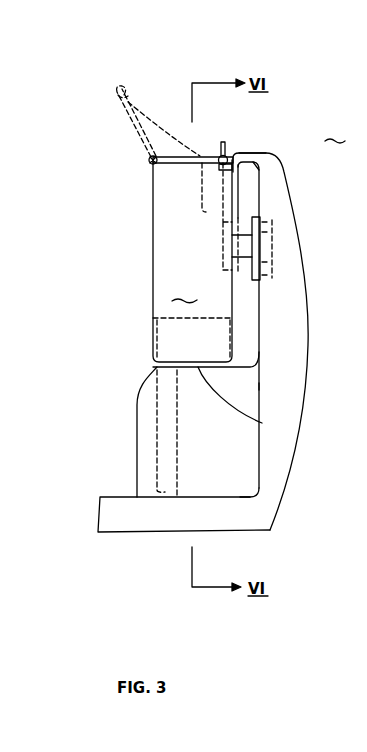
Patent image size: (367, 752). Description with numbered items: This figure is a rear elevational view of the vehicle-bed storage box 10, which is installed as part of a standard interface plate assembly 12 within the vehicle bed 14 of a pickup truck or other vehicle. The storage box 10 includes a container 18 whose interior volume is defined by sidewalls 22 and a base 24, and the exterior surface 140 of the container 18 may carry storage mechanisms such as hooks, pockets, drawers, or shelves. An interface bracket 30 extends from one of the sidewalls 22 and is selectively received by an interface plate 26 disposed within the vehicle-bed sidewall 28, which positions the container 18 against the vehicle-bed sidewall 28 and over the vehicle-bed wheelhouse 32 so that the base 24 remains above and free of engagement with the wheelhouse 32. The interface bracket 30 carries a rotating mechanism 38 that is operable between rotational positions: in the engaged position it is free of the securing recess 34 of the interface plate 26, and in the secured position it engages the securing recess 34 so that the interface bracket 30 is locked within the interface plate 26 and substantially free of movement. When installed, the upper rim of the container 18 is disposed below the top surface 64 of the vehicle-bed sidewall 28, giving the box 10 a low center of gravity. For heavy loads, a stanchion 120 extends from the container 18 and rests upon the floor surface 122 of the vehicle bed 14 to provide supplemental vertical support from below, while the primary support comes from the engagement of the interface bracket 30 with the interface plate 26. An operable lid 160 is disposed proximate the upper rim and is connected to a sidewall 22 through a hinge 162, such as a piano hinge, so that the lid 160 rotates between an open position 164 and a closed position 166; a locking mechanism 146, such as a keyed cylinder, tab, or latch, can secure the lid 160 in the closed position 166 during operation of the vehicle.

The vehicle-bed storage box 10 is at (120, 247).
The standard interface plate assembly 12 is at (275, 203).
The vehicle bed 14 is at (118, 488).
The container 18 is at (153, 316).
The sidewalls 22 is at (153, 190).
The base 24 is at (230, 400).
The interface plate 26 is at (247, 281).
The vehicle-bed sidewall 28 is at (259, 387).
The interface bracket 30 is at (230, 214).
The vehicle-bed wheelhouse 32 is at (143, 406).
The securing recess 34 is at (272, 270).
The rotating mechanism 38 is at (215, 258).
The top surface 64 is at (250, 153).
The stanchion 120 is at (175, 470).
The floor surface 122 is at (230, 497).
The exterior surface 140 is at (188, 233).
The locking mechanism 146 is at (236, 158).
The lid 160 is at (202, 158).
The hinge 162 is at (150, 160).
The open position 164 is at (118, 116).
The closed position 166 is at (167, 142).